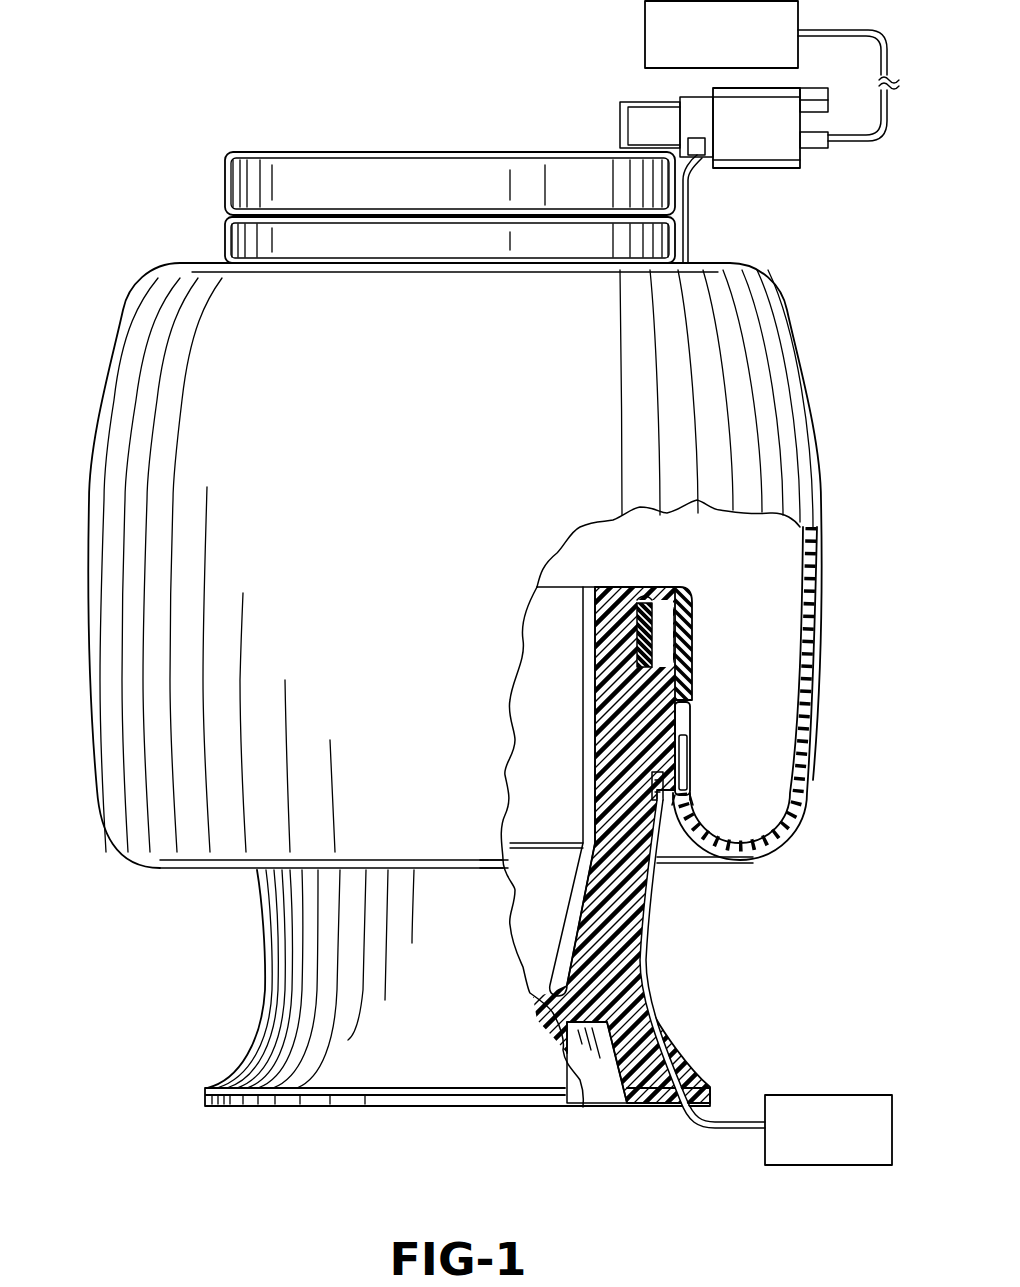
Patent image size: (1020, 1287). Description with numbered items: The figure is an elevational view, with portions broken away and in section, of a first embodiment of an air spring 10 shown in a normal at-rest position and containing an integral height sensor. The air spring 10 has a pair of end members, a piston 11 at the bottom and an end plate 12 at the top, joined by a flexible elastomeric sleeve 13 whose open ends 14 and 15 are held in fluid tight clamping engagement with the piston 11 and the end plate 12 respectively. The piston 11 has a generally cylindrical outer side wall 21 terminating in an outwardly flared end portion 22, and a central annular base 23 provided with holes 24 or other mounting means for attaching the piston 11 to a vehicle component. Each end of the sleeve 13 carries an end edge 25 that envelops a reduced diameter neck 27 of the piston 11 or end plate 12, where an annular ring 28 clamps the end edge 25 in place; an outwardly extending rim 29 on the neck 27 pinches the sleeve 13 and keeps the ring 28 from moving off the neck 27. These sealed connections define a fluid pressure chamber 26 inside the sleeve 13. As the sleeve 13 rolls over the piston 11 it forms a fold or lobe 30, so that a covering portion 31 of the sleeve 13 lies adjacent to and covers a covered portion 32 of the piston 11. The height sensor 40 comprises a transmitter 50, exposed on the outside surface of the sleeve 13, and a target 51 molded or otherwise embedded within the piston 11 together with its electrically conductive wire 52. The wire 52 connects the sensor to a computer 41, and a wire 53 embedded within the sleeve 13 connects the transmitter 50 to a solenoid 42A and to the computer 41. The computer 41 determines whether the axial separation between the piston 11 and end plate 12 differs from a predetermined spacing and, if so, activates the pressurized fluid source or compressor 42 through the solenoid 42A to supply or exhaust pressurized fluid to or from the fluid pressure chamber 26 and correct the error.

The air spring 10 is at (126, 924).
The piston 11 is at (428, 988).
The end plate 12 is at (330, 145).
The flexible elastomeric sleeve 13 is at (425, 575).
The open end 14 is at (255, 870).
The open end 15 is at (222, 263).
The outer side wall 21 is at (265, 930).
The outwardly flared end portion 22 is at (220, 1080).
The central annular base 23 is at (545, 1016).
The holes 24 is at (598, 1093).
The end edge 25 is at (650, 617).
The fluid pressure chamber 26 is at (783, 651).
The neck 27 is at (623, 587).
The annular ring 28 is at (225, 232).
The rim 29 is at (650, 597).
The lobe 30 is at (755, 863).
The covering portion 31 is at (686, 742).
The covered portion 32 is at (676, 726).
The height sensor 40 is at (667, 830).
The computer 41 is at (828, 1165).
The compressor 42 is at (645, 31).
The solenoid 42A is at (752, 168).
The transmitter 50 is at (682, 795).
The target 51 is at (660, 783).
The wire 52 is at (650, 992).
The wire 53 is at (688, 240).